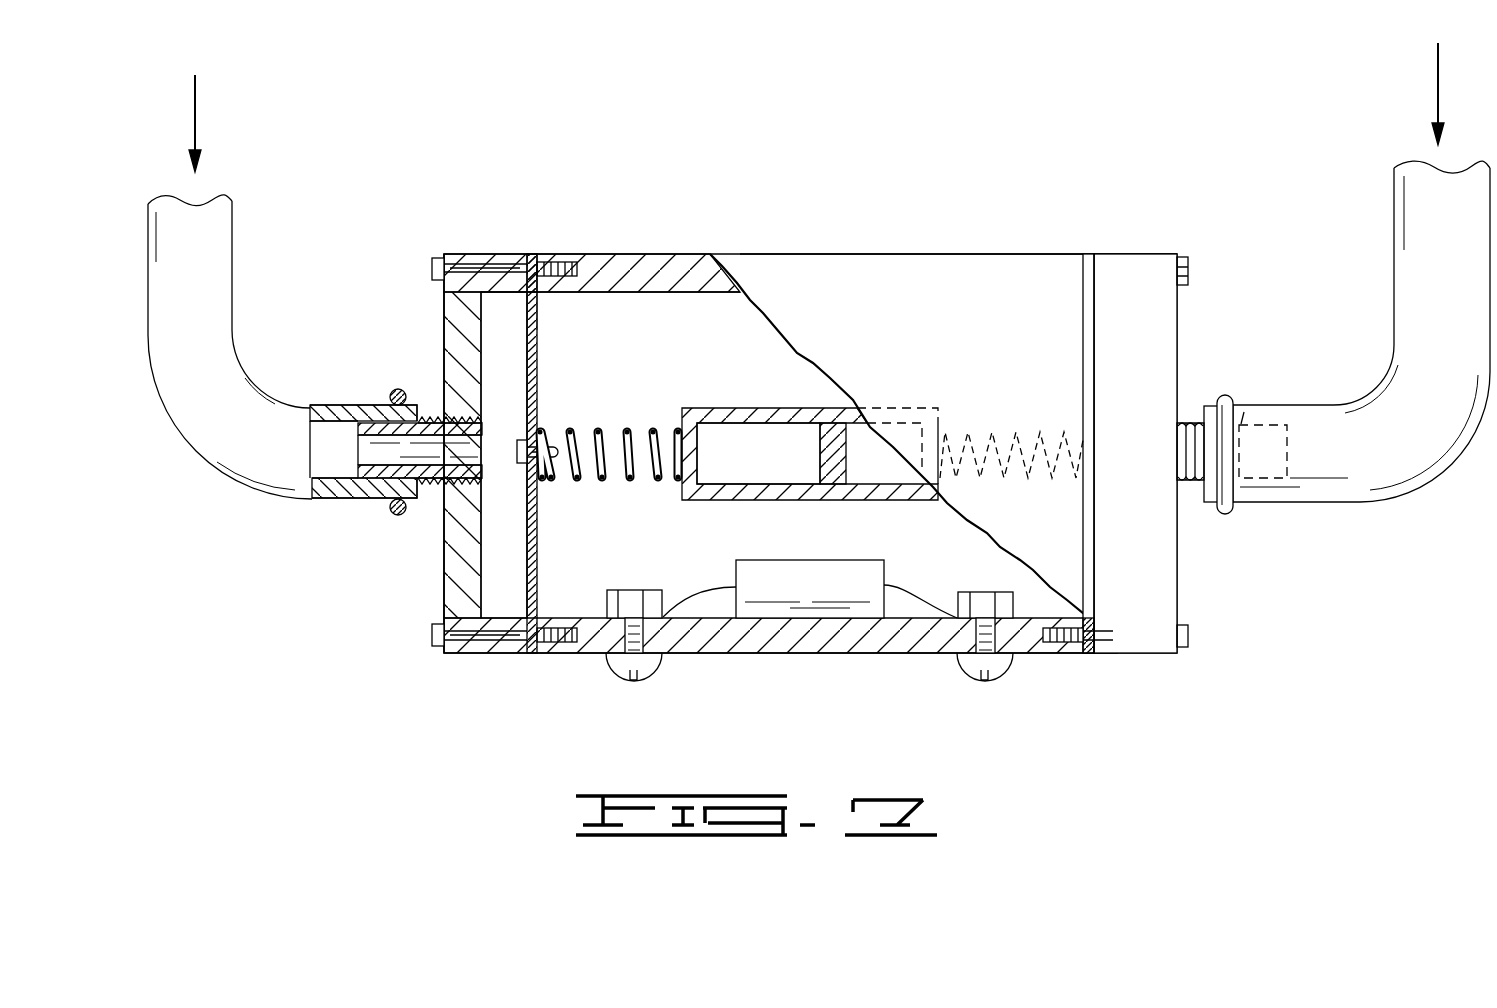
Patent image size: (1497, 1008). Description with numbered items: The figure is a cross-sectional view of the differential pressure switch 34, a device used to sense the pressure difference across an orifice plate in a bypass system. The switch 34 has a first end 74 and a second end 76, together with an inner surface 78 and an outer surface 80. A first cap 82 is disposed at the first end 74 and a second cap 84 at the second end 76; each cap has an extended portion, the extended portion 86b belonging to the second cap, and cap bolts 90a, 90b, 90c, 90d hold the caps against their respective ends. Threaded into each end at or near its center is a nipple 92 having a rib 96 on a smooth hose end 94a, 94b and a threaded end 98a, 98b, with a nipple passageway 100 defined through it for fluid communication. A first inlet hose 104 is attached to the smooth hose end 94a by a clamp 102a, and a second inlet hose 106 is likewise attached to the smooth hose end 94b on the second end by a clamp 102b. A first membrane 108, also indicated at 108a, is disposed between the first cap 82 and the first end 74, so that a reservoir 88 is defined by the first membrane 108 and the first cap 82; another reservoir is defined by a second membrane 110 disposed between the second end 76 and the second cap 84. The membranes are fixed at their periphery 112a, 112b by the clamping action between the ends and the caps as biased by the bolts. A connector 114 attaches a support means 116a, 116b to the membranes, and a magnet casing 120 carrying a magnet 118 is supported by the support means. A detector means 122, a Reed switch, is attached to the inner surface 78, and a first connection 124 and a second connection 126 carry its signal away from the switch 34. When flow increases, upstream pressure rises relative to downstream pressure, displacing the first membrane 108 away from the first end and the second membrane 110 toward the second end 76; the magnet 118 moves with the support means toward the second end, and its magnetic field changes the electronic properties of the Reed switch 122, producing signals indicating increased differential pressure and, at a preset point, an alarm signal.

The differential pressure switch 34 is at (768, 95).
The first end 74 is at (580, 254).
The second end 76 is at (1034, 254).
The inner surface 78 is at (577, 603).
The outer surface 80 is at (933, 282).
The first cap 82 is at (444, 592).
The second cap 84 is at (1147, 643).
The extended portion 86b is at (503, 254).
The reservoir 88 is at (493, 578).
The cap bolt 90a is at (430, 643).
The cap bolt 90b is at (437, 258).
The cap bolt 90c is at (1190, 267).
The cap bolt 90d is at (1190, 628).
The nipple 92 is at (433, 420).
The smooth hose end 94a is at (370, 407).
The smooth hose end 94b is at (1247, 400).
The rib 96 is at (363, 497).
The threaded end 98a is at (428, 480).
The threaded end 98b is at (1188, 423).
The nipple passageway 100 is at (363, 453).
The clamp 102a is at (397, 390).
The clamp 102b is at (1227, 507).
The first inlet hose 104 is at (243, 233).
The second inlet hose 106 is at (1394, 202).
The first membrane 108 is at (520, 600).
The first membrane 108a is at (543, 331).
The second membrane 110 is at (1095, 576).
The periphery 112a is at (531, 254).
The periphery 112b is at (1089, 254).
The connector 114 is at (513, 462).
The support means 116a is at (598, 430).
The support means 116b is at (1065, 507).
The magnet 118 is at (817, 453).
The magnet casing 120 is at (883, 500).
The detector means 122 is at (792, 607).
The first connection 124 is at (647, 680).
The second connection 126 is at (1002, 677).